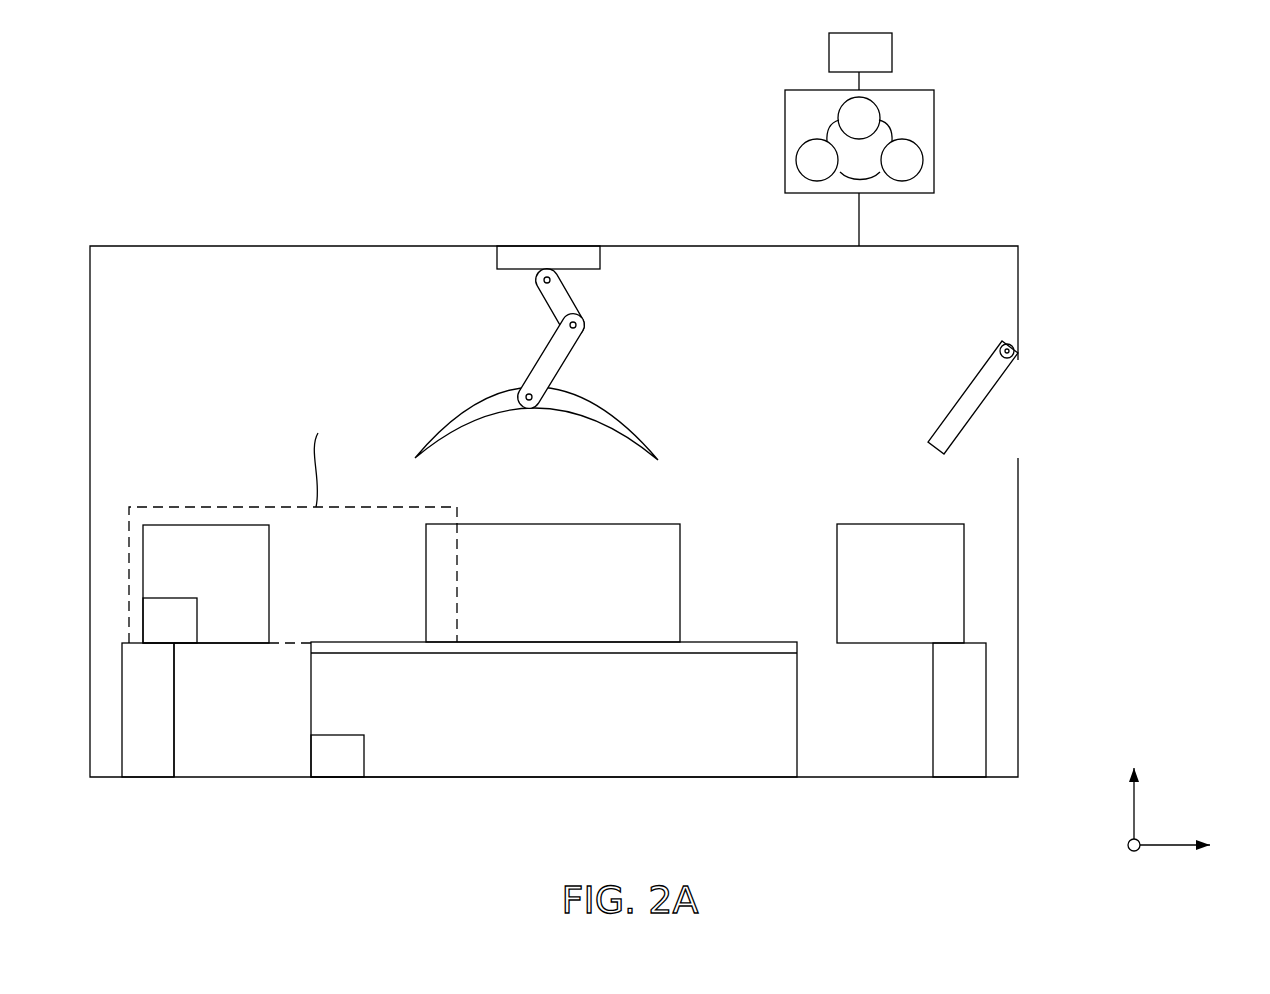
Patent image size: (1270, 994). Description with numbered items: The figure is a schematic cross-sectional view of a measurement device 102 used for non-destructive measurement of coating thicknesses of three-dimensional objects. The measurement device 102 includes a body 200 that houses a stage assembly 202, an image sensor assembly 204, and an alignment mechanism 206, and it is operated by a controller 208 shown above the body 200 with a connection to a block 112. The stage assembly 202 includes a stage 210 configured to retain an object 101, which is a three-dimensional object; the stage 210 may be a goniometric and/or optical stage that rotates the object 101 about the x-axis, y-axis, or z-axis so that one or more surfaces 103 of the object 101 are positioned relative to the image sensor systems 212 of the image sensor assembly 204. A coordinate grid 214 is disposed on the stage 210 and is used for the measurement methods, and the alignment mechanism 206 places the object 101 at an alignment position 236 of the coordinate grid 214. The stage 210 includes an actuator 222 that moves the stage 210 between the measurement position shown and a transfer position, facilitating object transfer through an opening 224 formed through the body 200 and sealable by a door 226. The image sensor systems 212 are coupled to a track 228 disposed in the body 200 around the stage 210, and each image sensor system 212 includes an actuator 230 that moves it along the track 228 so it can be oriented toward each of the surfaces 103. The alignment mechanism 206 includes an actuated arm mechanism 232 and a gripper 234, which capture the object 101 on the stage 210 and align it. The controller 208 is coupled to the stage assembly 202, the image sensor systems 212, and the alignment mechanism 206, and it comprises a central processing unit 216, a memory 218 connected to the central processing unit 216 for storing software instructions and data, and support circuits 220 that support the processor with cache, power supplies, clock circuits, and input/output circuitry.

The measurement device 102 is at (360, 196).
The controller 112 is at (843, 65).
The body 200 is at (962, 246).
The stage assembly 202 is at (554, 650).
The image sensor assembly 204 is at (118, 562).
The alignment mechanism 206 is at (570, 353).
The controller 208 is at (901, 168).
The stage 210 is at (544, 721).
The image sensor system 212 is at (206, 544).
The coordinate grid 214 is at (714, 655).
The central processing unit 216 is at (843, 131).
The memory 218 is at (886, 173).
The support circuits 220 is at (801, 173).
The actuator 222 is at (321, 763).
The opening 224 is at (1025, 410).
The door 226 is at (960, 397).
The track 228 is at (131, 711).
The actuator 230 is at (154, 628).
The actuated arm mechanism 232 is at (600, 326).
The gripper 234 is at (575, 383).
The alignment position 236 is at (422, 636).
The object 101 is at (544, 591).
The surfaces 103 is at (551, 523).